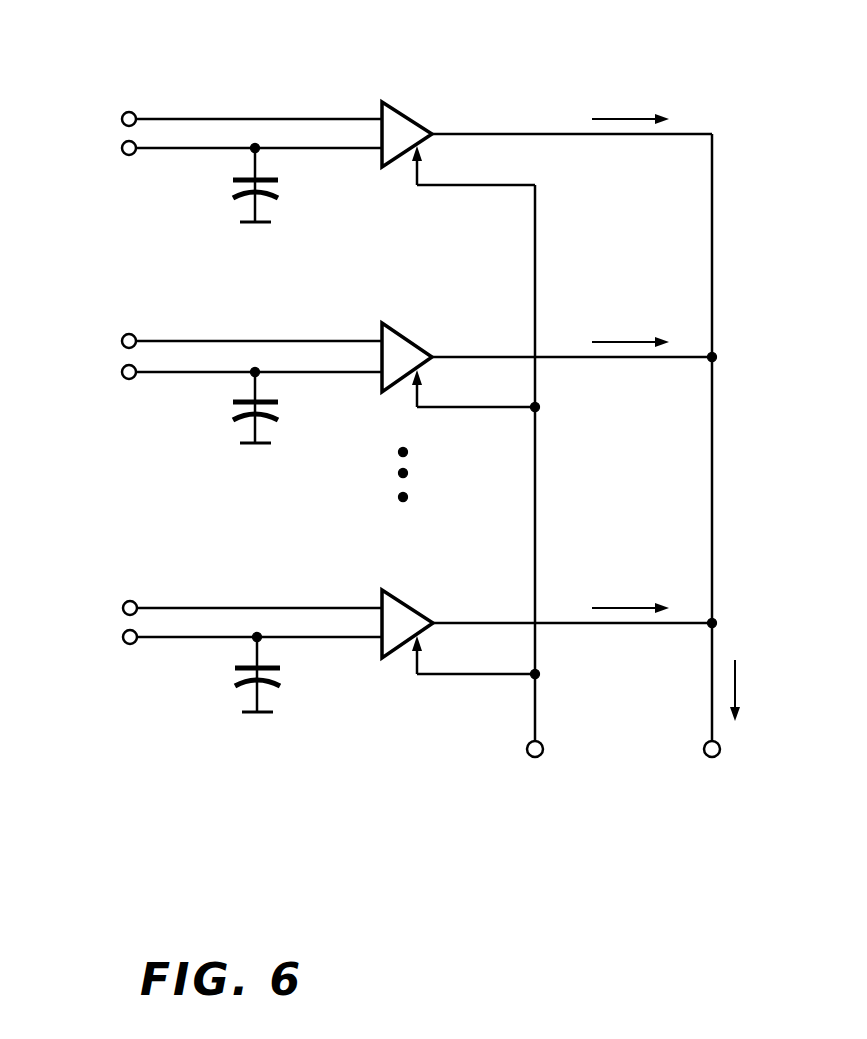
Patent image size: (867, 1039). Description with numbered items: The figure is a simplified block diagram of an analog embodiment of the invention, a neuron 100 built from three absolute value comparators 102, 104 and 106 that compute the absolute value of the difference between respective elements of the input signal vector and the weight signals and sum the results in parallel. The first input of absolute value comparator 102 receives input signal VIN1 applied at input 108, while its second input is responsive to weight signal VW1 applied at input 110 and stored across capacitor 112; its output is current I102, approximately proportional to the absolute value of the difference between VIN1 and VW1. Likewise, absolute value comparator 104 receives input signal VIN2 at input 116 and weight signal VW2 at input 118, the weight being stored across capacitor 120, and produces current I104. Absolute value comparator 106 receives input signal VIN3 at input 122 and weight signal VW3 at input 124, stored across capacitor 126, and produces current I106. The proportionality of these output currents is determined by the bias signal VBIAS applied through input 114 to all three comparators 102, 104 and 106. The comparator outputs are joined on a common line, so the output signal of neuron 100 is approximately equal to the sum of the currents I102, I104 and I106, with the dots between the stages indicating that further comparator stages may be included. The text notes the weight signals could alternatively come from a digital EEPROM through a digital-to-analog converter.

The neuron 100 is at (736, 730).
The absolute value comparator 102 is at (404, 115).
The absolute value comparator 104 is at (404, 337).
The absolute value comparator 106 is at (404, 603).
The input 108 is at (129, 111).
The input 110 is at (129, 156).
The capacitor 112 is at (285, 189).
The input 114 is at (543, 746).
The input 116 is at (129, 333).
The input 118 is at (129, 380).
The capacitor 120 is at (285, 411).
The input 122 is at (130, 600).
The input 124 is at (130, 645).
The capacitor 126 is at (287, 677).